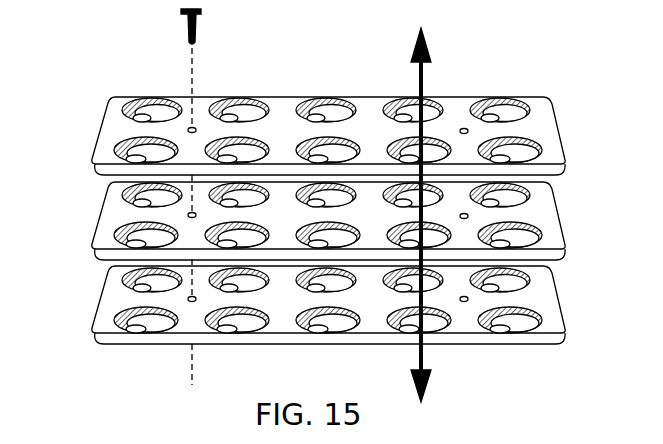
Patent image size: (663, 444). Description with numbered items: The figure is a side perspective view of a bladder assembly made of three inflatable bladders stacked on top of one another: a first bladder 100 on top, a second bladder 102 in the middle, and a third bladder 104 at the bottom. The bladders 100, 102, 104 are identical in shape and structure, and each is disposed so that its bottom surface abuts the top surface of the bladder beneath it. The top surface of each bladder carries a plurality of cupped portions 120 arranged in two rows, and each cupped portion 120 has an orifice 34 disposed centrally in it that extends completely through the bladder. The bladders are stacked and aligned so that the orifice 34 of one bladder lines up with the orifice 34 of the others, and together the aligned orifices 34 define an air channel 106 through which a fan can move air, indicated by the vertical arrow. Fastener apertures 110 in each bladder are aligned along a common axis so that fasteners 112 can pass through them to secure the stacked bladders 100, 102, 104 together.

The first bladder 100 is at (324, 132).
The second bladder 102 is at (320, 224).
The third bladder 104 is at (317, 324).
The fastener apertures 110 is at (194, 128).
The fasteners 112 is at (197, 25).
The air channel 106 is at (418, 86).
The orifice 34 is at (410, 148).
The cupped portions 120 is at (527, 148).